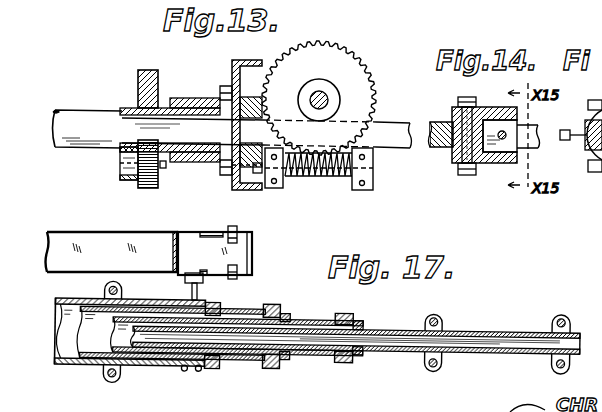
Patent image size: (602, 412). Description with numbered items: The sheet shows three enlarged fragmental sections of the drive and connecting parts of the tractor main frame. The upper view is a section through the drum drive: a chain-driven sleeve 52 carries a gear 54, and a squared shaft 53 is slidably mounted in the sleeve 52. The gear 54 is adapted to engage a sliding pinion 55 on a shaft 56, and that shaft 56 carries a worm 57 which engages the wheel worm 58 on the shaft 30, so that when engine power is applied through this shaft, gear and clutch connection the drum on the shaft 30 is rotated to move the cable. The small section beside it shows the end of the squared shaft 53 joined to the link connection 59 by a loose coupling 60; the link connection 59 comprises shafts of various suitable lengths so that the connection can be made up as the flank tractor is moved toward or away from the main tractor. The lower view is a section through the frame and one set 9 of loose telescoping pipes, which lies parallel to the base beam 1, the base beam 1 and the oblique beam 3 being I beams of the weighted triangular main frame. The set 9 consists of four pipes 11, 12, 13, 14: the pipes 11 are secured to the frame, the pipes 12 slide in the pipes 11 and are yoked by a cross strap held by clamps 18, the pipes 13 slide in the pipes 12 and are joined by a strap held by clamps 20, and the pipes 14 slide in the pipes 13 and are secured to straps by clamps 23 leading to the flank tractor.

In FIG. 17, the base beam 1 is at (105, 232).
In FIG. 17, the oblique beam 3 is at (253, 254).
In FIG. 17, the set of loose telescoping pipes 9 is at (345, 296).
In FIG. 17, the pipes 11 is at (166, 363).
In FIG. 17, the pipes 12 is at (237, 358).
In FIG. 17, the pipes 13 is at (315, 358).
In FIG. 17, the pipes 14 is at (491, 325).
In FIG. 17, the clamps 18 is at (271, 303).
In FIG. 17, the clamps 20 is at (343, 311).
In FIG. 17, the clamps 23 is at (553, 308).
In FIG. 13, the shaft 30 is at (326, 97).
In FIG. 13, the sleeve 52 is at (80, 117).
In FIG. 13, the squared shaft 53 is at (222, 131).
In FIG. 14, the squared shaft 53 is at (437, 122).
In FIG. 13, the gear 54 is at (140, 78).
In FIG. 13, the sliding pinion 55 is at (156, 183).
In FIG. 13, the shaft 56 is at (166, 166).
In FIG. 13, the worm 57 is at (323, 176).
In FIG. 13, the wheel worm 58 is at (332, 64).
In FIG. 14, the link connection 59 is at (536, 144).
In FIG. 14, the loose coupling 60 is at (457, 174).